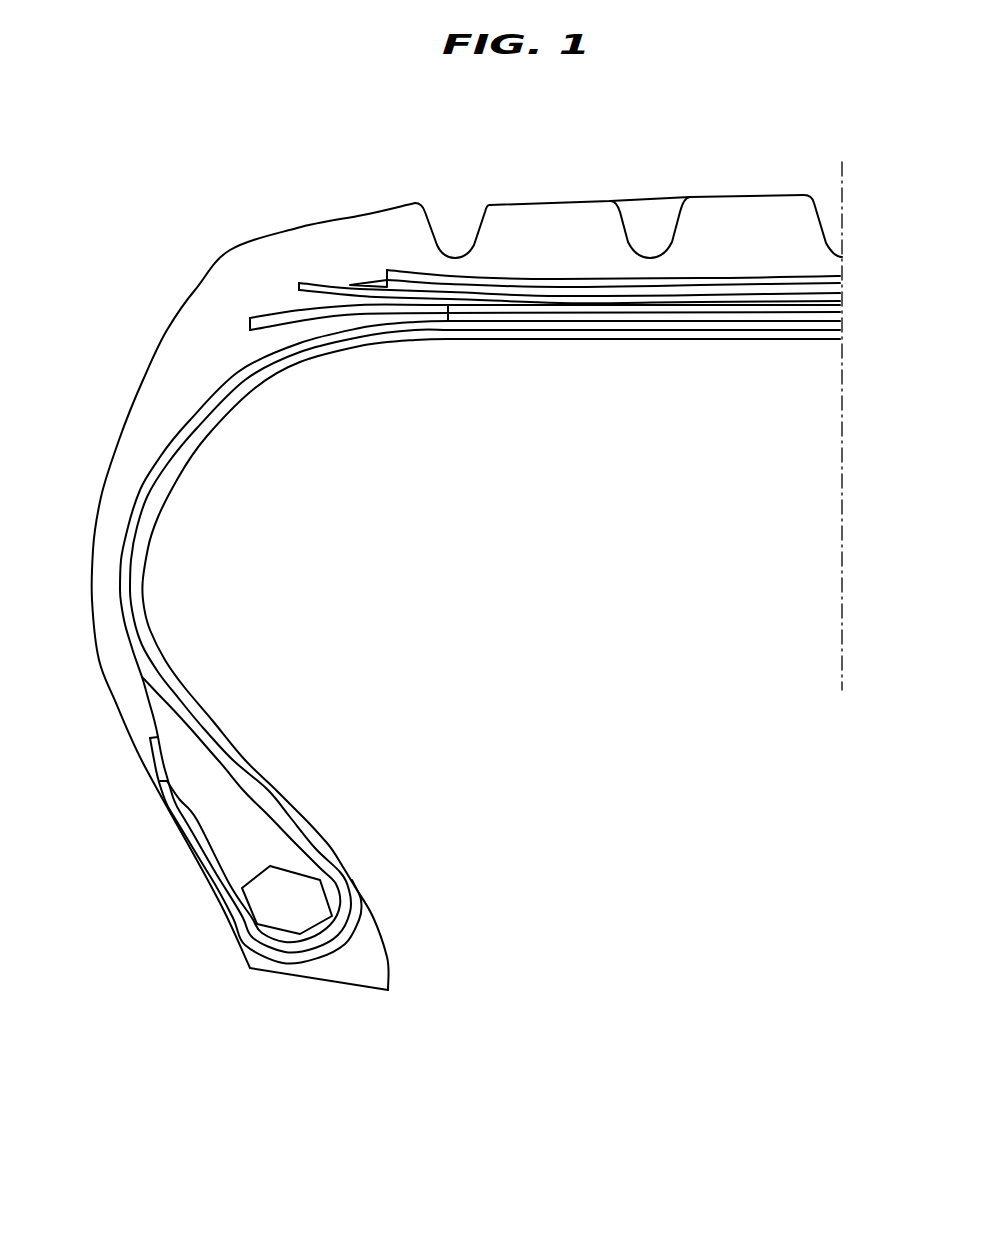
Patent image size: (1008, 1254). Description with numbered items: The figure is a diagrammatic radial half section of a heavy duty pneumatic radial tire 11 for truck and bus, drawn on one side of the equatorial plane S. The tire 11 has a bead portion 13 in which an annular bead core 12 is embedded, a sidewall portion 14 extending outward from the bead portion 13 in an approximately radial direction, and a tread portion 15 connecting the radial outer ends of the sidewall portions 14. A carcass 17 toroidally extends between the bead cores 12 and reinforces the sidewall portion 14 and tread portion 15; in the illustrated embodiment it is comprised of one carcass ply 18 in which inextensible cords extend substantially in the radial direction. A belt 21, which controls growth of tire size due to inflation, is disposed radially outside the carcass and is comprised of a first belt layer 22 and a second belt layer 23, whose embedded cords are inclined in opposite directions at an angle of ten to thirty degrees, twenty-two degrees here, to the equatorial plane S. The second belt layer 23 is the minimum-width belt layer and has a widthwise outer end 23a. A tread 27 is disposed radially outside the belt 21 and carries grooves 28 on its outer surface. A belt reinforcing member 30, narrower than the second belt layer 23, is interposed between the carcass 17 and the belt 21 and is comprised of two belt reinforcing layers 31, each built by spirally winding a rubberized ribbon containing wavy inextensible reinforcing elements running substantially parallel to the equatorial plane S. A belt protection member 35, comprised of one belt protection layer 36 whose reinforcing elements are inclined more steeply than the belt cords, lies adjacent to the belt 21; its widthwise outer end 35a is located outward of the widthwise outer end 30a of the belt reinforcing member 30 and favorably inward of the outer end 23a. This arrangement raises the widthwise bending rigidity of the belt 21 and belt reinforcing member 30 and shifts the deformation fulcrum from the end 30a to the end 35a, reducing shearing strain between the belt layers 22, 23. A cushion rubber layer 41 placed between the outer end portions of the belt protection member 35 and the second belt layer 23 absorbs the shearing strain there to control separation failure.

The heavy duty pneumatic radial tire 11 is at (300, 210).
The bead core 12 is at (312, 900).
The bead portion 13 is at (308, 803).
The sidewall portion 14 is at (147, 578).
The tread portion 15 is at (541, 200).
The carcass 17 is at (237, 393).
The carcass ply 18 is at (158, 452).
The belt 21 is at (392, 306).
The first belt layer 22 is at (317, 317).
The second belt layer 23 is at (318, 284).
The widthwise outer end of the second belt layer 23a is at (302, 283).
The tread 27 is at (590, 212).
The grooves 28 is at (433, 228).
The belt reinforcing member 30 is at (636, 324).
The widthwise outer end of the belt reinforcing member 30a is at (446, 313).
The belt reinforcing layer 31 is at (750, 308).
The belt protection member 35 is at (708, 277).
The widthwise outer end of the belt protection member 35a is at (385, 275).
The belt protection layer 36 is at (581, 284).
The cushion rubber layer 41 is at (348, 284).
The equatorial plane S is at (838, 512).